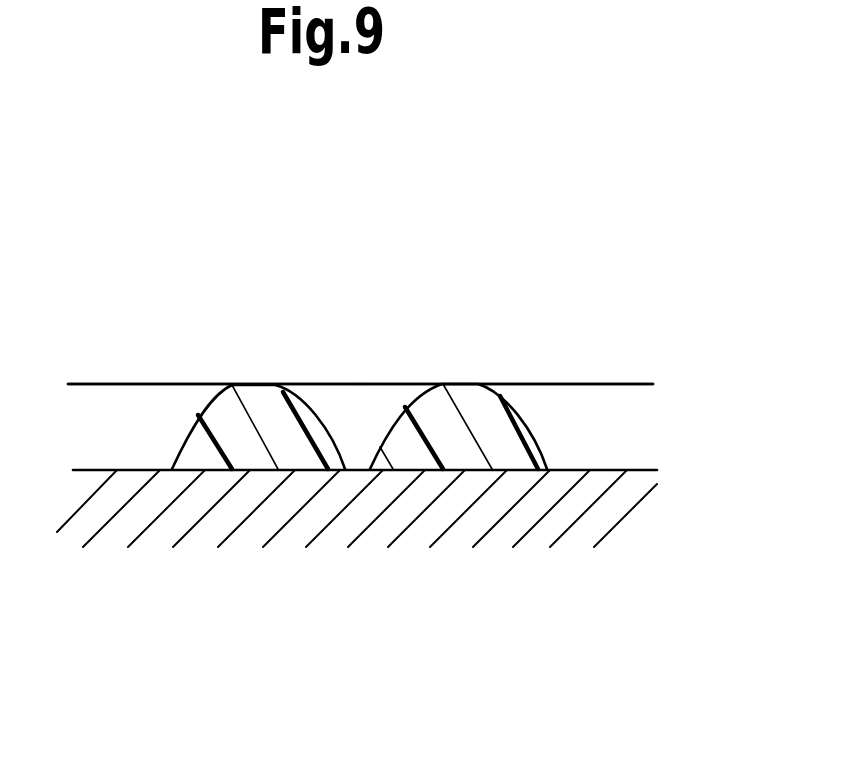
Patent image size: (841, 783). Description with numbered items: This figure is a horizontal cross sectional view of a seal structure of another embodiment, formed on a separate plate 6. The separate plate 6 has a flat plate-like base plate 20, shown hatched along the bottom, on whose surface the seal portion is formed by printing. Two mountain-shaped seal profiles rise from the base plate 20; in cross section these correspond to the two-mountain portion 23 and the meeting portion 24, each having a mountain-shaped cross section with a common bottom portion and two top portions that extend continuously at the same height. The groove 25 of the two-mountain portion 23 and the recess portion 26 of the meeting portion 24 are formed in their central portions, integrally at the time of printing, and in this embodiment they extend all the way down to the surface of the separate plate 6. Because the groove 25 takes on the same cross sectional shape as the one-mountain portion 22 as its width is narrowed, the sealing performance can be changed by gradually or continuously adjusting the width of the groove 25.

The separate plate 6 is at (567, 333).
The base plate 20 is at (585, 482).
The one-mountain portion 22 is at (111, 400).
The two-mountain portion 23 is at (607, 398).
The meeting portion 24 is at (445, 365).
The groove 25 is at (350, 407).
The recess portion 26 is at (362, 426).